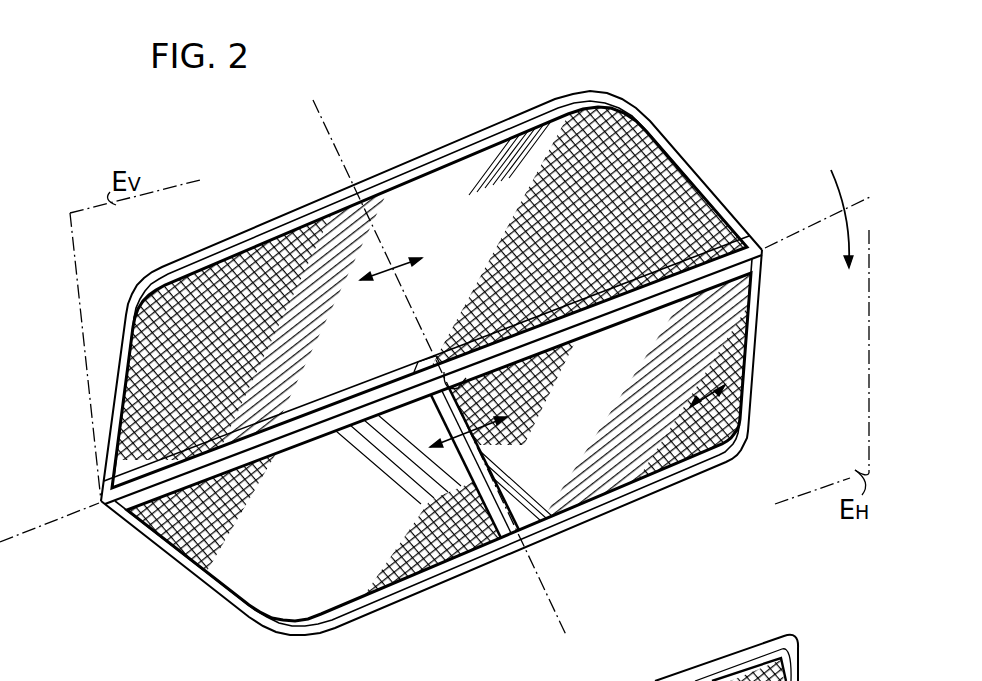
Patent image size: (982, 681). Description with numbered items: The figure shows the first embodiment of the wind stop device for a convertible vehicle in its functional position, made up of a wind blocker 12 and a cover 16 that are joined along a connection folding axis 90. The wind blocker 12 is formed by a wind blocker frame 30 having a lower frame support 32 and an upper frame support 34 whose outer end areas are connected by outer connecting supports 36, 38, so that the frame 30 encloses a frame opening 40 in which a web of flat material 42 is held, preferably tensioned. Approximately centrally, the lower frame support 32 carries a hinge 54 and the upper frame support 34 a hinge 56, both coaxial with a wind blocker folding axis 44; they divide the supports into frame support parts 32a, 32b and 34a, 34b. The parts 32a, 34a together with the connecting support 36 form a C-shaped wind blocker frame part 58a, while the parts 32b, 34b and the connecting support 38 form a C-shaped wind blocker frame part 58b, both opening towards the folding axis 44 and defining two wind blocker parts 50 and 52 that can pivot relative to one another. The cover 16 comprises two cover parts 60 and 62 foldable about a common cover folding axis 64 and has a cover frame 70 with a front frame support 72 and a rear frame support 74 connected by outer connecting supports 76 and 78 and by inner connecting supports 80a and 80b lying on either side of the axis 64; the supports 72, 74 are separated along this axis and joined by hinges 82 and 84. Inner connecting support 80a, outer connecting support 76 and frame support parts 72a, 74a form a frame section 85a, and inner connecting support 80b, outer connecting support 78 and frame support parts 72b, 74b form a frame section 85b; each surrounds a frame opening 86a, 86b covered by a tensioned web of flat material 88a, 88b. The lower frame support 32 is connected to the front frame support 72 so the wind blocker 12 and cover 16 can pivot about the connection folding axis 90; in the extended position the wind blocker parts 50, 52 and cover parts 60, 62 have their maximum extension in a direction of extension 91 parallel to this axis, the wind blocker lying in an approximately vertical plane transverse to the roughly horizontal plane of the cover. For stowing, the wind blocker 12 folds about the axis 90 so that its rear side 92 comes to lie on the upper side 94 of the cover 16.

The wind blocker 12 is at (376, 166).
The cover 16 is at (607, 470).
The wind blocker frame 30 is at (501, 126).
The lower frame support 32 is at (353, 388).
The frame support part 32a is at (123, 528).
The frame support part 32b is at (518, 300).
The upper frame support 34 is at (352, 218).
The frame support part 34a is at (253, 233).
The frame support part 34b is at (472, 142).
The outer connecting support 36 is at (118, 367).
The outer connecting support 38 is at (710, 190).
The frame opening 40 is at (432, 218).
The web of flat material 42 is at (652, 127).
The wind blocker folding axis 44 is at (342, 189).
The wind blocker part 50 is at (246, 282).
The wind blocker part 52 is at (578, 160).
The hinge 54 is at (420, 366).
The hinge 56 is at (348, 205).
The wind blocker frame part 58a is at (226, 340).
The wind blocker frame part 58b is at (618, 202).
The cover part 60 is at (322, 633).
The cover part 62 is at (748, 440).
The cover folding axis 64 is at (556, 612).
The cover frame 70 is at (511, 572).
The front frame support 72 is at (553, 337).
The front frame support part 72a is at (311, 427).
The front frame support part 72b is at (627, 312).
The rear frame support 74 is at (722, 462).
The rear frame support part 74a is at (428, 581).
The rear frame support part 74b is at (692, 496).
The outer connecting support 76 is at (248, 615).
The outer connecting support 78 is at (755, 353).
The inner connecting support 80a is at (438, 503).
The inner connecting support 80b is at (502, 478).
The hinge 82 is at (454, 356).
The hinge 84 is at (527, 550).
The frame section 85a is at (220, 547).
The frame section 85b is at (737, 383).
The frame opening 86a is at (276, 630).
The frame opening 86b is at (628, 505).
The web of flat material 88a is at (166, 558).
The web of flat material 88b is at (692, 482).
The connection folding axis 90 is at (14, 530).
The direction of extension 91 is at (433, 374).
The rear side 92 is at (128, 311).
The upper side 94 is at (371, 603).